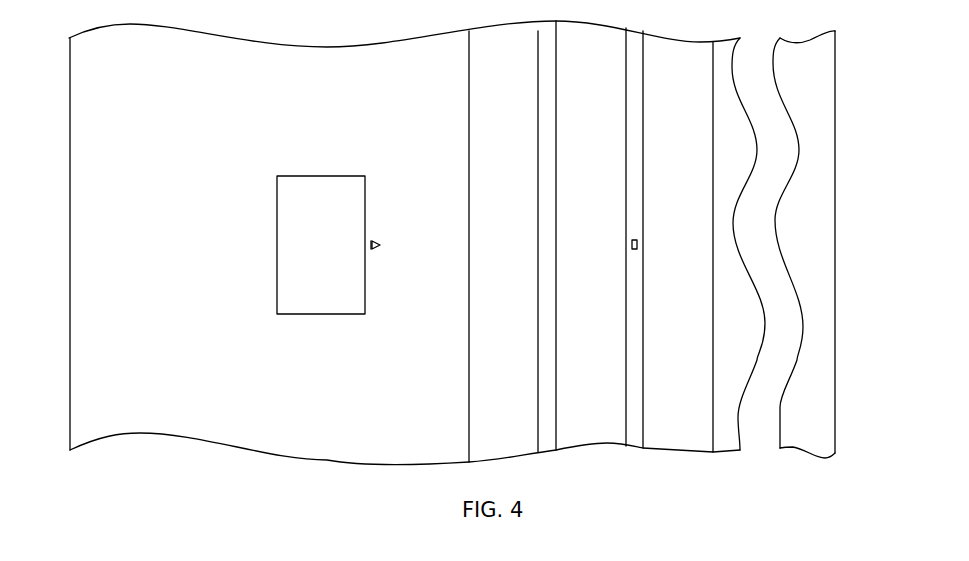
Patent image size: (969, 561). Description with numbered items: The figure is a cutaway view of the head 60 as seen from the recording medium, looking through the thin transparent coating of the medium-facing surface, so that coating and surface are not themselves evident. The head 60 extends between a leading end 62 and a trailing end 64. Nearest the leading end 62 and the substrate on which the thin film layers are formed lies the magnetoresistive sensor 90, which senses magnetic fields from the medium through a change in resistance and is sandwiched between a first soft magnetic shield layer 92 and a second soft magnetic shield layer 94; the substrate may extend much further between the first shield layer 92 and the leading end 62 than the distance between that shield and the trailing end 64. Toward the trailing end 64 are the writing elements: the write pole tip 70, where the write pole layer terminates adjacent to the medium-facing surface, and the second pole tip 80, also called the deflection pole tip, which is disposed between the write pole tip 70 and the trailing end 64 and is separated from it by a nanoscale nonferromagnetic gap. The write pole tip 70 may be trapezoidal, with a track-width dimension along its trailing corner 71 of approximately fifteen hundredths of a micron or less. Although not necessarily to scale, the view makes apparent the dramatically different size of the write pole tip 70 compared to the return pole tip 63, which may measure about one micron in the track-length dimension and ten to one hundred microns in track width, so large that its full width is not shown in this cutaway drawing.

The head 60 is at (149, 472).
The leading end 62 is at (842, 330).
The return pole tip 63 is at (469, 360).
The trailing end 64 is at (62, 245).
The write pole tip 70 is at (378, 248).
The trailing corner 71 is at (372, 243).
The second pole tip 80 is at (312, 314).
The magnetoresistive sensor 90 is at (632, 245).
The first soft magnetic shield layer 92 is at (713, 237).
The second soft magnetic shield layer 94 is at (556, 123).